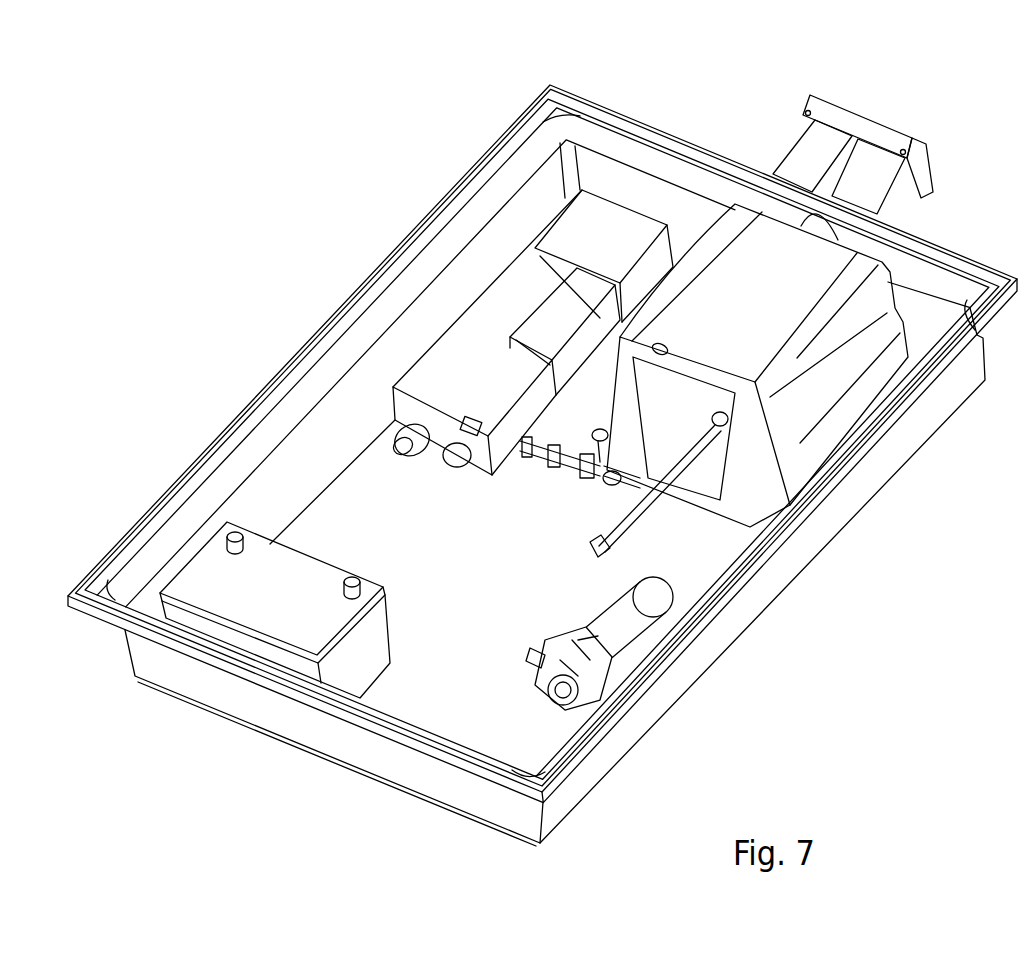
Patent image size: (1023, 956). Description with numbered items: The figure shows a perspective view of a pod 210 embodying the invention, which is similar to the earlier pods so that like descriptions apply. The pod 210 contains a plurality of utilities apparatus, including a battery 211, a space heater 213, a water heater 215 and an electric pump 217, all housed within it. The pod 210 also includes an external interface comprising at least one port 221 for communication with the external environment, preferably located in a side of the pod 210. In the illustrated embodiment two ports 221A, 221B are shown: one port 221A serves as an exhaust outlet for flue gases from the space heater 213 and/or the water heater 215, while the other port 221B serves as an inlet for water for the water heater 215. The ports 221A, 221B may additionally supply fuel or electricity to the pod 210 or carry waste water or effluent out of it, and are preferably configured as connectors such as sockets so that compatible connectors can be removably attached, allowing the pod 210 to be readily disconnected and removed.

The pod 210 is at (318, 326).
The battery 211 is at (205, 552).
The space heater 213 is at (482, 333).
The water heater 215 is at (818, 377).
The electric pump 217 is at (645, 617).
The port 221 is at (836, 123).
The port 221A is at (828, 135).
The port 221B is at (878, 172).